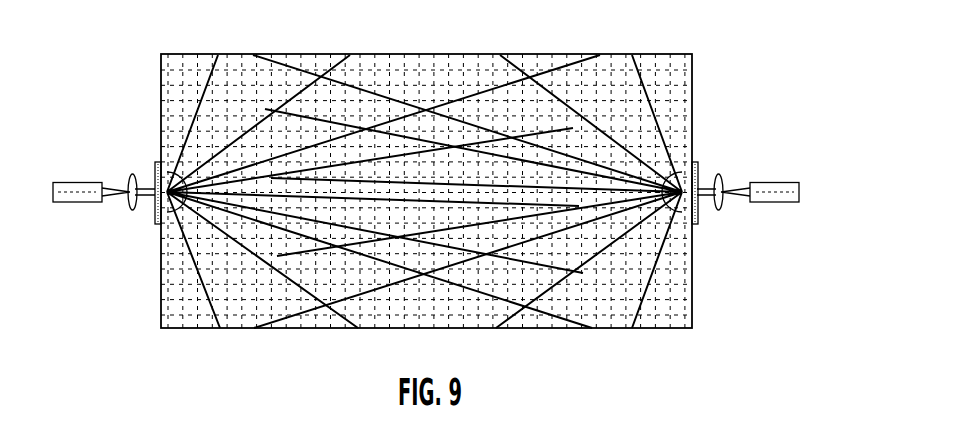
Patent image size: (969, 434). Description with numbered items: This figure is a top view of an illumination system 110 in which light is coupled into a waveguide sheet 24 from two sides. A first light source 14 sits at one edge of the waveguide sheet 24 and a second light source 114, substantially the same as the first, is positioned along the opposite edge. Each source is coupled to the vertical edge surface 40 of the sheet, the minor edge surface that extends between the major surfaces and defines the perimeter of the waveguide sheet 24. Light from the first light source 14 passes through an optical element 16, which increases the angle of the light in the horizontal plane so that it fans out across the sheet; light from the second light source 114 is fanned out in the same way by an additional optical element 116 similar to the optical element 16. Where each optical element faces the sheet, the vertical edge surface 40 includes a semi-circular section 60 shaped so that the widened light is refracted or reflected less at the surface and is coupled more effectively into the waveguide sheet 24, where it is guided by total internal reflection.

The light source 14 is at (133, 172).
The optical element 16 is at (157, 225).
The waveguide sheet 24 is at (675, 70).
The vertical edge surface 40 is at (161, 101).
The semi-circular section 60 is at (163, 172).
The illumination system 110 is at (797, 102).
The second light source 114 is at (802, 172).
The additional optical element 116 is at (699, 224).